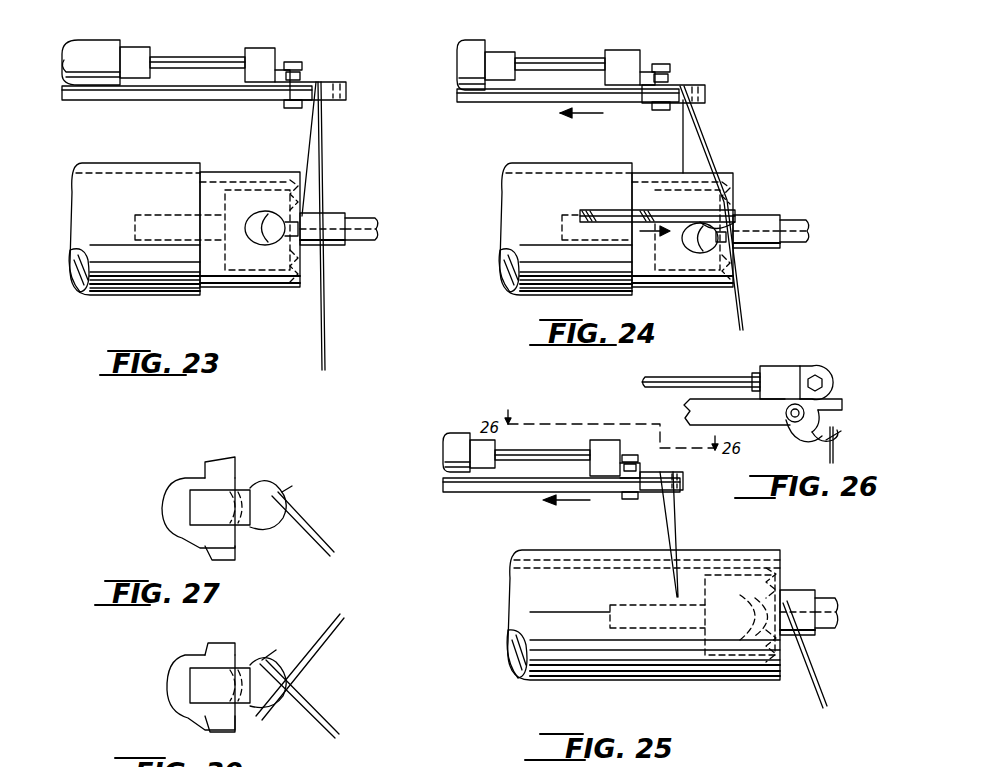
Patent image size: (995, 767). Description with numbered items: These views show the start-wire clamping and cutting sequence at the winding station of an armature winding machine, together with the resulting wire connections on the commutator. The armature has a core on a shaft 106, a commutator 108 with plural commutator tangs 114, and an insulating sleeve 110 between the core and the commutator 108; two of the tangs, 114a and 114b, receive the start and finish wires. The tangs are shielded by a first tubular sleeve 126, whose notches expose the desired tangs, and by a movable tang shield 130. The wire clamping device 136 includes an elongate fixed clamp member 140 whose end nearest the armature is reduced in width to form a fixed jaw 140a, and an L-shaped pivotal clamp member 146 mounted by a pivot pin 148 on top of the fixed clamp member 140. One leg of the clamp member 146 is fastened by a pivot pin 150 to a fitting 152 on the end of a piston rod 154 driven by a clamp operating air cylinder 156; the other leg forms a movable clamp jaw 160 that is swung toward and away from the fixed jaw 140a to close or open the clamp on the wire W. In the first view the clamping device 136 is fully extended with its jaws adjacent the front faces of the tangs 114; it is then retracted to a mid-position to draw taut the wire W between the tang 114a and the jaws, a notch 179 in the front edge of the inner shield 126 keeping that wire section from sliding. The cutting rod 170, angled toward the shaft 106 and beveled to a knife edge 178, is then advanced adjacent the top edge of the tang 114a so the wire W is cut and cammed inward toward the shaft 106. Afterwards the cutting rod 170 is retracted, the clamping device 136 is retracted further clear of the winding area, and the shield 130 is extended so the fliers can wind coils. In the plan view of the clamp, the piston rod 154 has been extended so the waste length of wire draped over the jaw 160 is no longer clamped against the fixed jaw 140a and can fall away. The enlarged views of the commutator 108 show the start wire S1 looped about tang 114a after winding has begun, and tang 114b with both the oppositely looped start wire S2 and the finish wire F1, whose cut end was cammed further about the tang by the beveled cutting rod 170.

In FIG. 23, the armature shaft 106 is at (355, 240).
In FIG. 24, the armature shaft 106 is at (796, 224).
In FIG. 25, the armature shaft 106 is at (826, 600).
In FIG. 27, the commutator 108 is at (166, 500).
In FIG. 30, the commutator 108 is at (180, 688).
In FIG. 23, the insulating sleeve 110 is at (330, 213).
In FIG. 24, the insulating sleeve 110 is at (765, 248).
In FIG. 25, the insulating sleeve 110 is at (803, 649).
In FIG. 25, the commutator tangs 114 is at (782, 586).
In FIG. 23, the commutator tang 114a is at (270, 224).
In FIG. 24, the commutator tang 114a is at (704, 238).
In FIG. 27, the commutator tang 114a is at (213, 498).
In FIG. 30, the commutator tang 114b is at (213, 680).
In FIG. 23, the first tubular sleeve 126 is at (256, 172).
In FIG. 24, the first tubular sleeve 126 is at (682, 230).
In FIG. 23, the second movable sleeve or tang shield 130 is at (164, 163).
In FIG. 24, the second movable sleeve or tang shield 130 is at (565, 229).
In FIG. 25, the second movable sleeve or tang shield 130 is at (612, 550).
In FIG. 23, the wire clamping device 136 is at (283, 36).
In FIG. 24, the wire clamping device 136 is at (684, 48).
In FIG. 26, the wire clamping device 136 is at (766, 350).
In FIG. 25, the wire clamping device 136 is at (430, 446).
In FIG. 23, the fixed clamp member 140 is at (190, 100).
In FIG. 24, the fixed clamp member 140 is at (568, 103).
In FIG. 26, the fixed clamp member 140 is at (685, 411).
In FIG. 25, the fixed clamp member 140 is at (515, 493).
In FIG. 26, the fixed jaw 140a is at (836, 410).
In FIG. 26, the pivotally movable clamp member 146 is at (790, 428).
In FIG. 26, the pivot pin 148 is at (785, 412).
In FIG. 26, the pivot pin 150 is at (821, 382).
In FIG. 26, the fitting 152 is at (784, 366).
In FIG. 23, the piston rod 154 is at (222, 57).
In FIG. 24, the piston rod 154 is at (578, 58).
In FIG. 26, the piston rod 154 is at (683, 378).
In FIG. 25, the piston rod 154 is at (542, 455).
In FIG. 23, the clamp operating air cylinder 156 is at (138, 47).
In FIG. 24, the clamp operating air cylinder 156 is at (486, 65).
In FIG. 25, the clamp operating air cylinder 156 is at (484, 440).
In FIG. 23, the movable clamp jaw 160 is at (347, 90).
In FIG. 24, the movable clamp jaw 160 is at (707, 92).
In FIG. 26, the movable clamp jaw 160 is at (818, 442).
In FIG. 25, the movable clamp jaw 160 is at (684, 484).
In FIG. 24, the cutting rod 170 is at (648, 210).
In FIG. 24, the knife edge 178 is at (728, 220).
In FIG. 23, the notch 179 is at (290, 188).
In FIG. 24, the notch 179 is at (728, 205).
In FIG. 23, the wire W is at (326, 160).
In FIG. 24, the wire W is at (710, 143).
In FIG. 26, the wire W is at (838, 458).
In FIG. 25, the wire W is at (681, 520).
In FIG. 27, the start wire S1 is at (305, 510).
In FIG. 30, the start wire S2 is at (312, 698).
In FIG. 30, the finish wire F1 is at (320, 652).